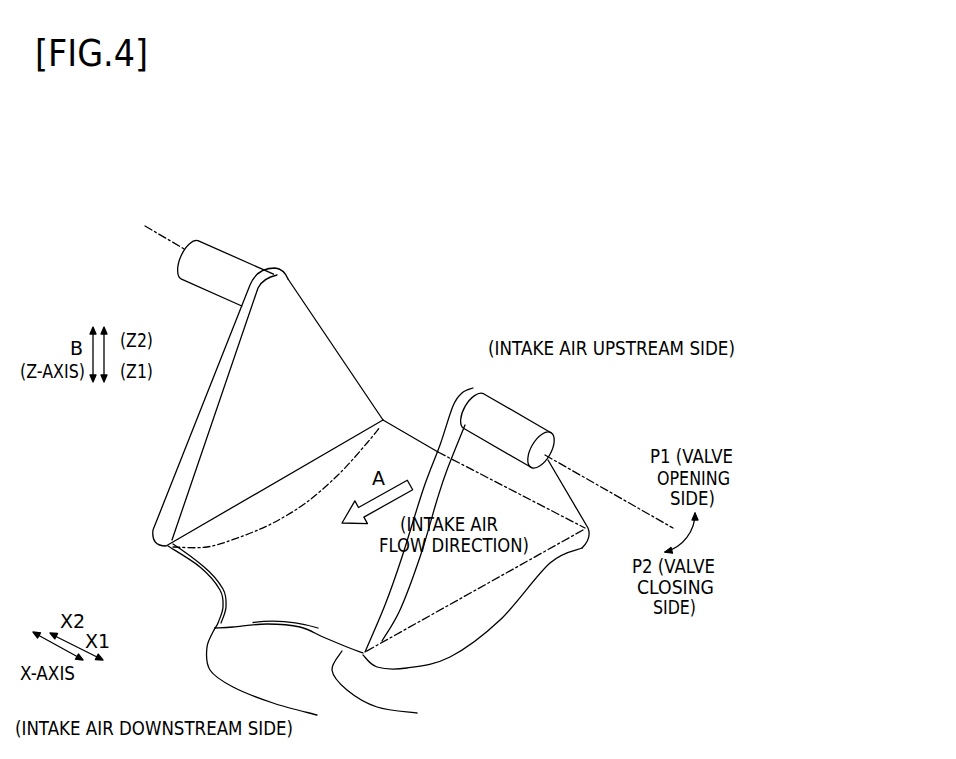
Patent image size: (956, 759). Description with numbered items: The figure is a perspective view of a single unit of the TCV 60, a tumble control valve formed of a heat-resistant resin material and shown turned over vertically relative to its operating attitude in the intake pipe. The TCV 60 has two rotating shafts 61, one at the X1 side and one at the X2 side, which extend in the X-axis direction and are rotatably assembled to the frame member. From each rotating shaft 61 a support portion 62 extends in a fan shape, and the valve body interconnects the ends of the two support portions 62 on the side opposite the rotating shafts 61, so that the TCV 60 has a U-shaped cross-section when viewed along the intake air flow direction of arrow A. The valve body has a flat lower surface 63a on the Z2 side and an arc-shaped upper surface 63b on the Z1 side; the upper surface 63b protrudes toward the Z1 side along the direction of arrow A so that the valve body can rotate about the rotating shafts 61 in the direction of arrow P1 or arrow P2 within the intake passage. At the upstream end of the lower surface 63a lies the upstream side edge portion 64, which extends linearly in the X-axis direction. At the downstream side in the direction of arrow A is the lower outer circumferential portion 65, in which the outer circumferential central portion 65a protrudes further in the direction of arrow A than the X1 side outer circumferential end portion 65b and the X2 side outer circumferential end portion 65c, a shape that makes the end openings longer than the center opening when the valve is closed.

The TCV 60 is at (536, 273).
The rotating shaft 61 is at (237, 262).
The support portion 62 is at (343, 368).
The lower surface 63a is at (387, 443).
The upper surface 63b is at (468, 625).
The upstream side edge portion 64 is at (420, 437).
The lower outer circumferential portion 65 is at (224, 596).
The outer circumferential central portion 65a is at (284, 673).
The X1 side outer circumferential end portion 65b is at (394, 688).
The X2 side outer circumferential end portion 65c is at (172, 550).